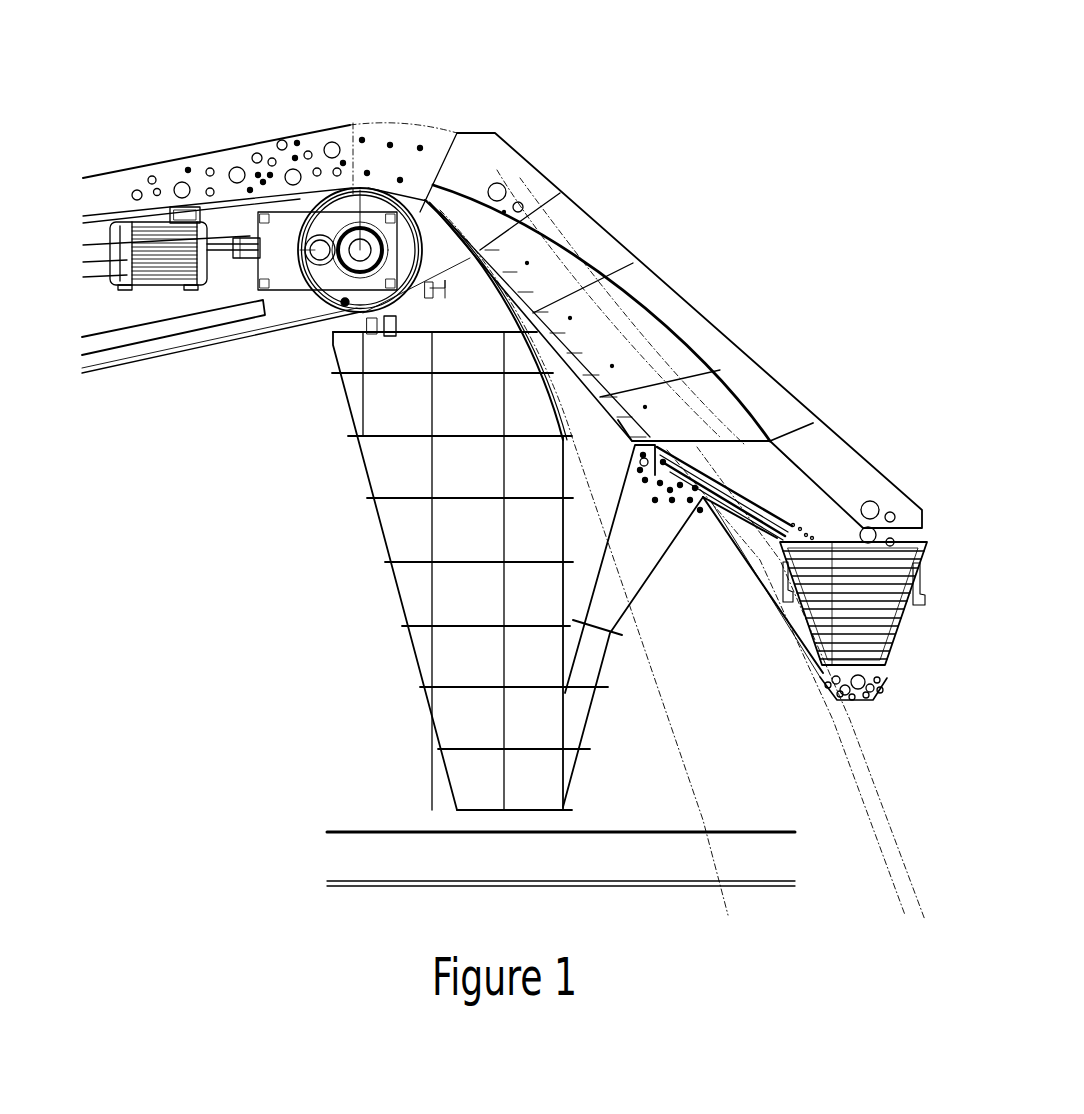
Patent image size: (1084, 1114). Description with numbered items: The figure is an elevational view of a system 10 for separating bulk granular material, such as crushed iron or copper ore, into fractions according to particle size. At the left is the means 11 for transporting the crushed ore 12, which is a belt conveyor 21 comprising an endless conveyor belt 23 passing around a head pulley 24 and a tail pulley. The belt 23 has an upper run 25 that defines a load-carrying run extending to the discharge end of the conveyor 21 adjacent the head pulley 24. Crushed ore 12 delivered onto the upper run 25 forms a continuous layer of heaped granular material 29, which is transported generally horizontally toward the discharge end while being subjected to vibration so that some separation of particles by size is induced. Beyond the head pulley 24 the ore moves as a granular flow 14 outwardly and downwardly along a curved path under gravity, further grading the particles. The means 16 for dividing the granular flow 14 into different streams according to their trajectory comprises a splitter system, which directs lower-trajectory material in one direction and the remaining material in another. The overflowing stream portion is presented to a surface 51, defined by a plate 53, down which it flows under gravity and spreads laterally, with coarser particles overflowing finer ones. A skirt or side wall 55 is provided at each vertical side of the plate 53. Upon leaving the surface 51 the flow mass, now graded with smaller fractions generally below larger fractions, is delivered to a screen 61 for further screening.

The system 10 is at (626, 545).
The means for transporting granular material 11 is at (290, 175).
The crushed ore 12 is at (303, 116).
The granular flow 14 is at (426, 247).
The means for dividing the granular flow 16 is at (689, 323).
The conveyor 21 is at (221, 378).
The endless conveyor belt 23 is at (173, 376).
The head pulley 24 is at (435, 571).
The upper run 25 is at (250, 192).
The heaped granular material 29 is at (152, 133).
The surface 51 is at (760, 464).
The plate 53 is at (703, 574).
The skirt or side wall 55 is at (697, 486).
The screen 61 is at (872, 621).